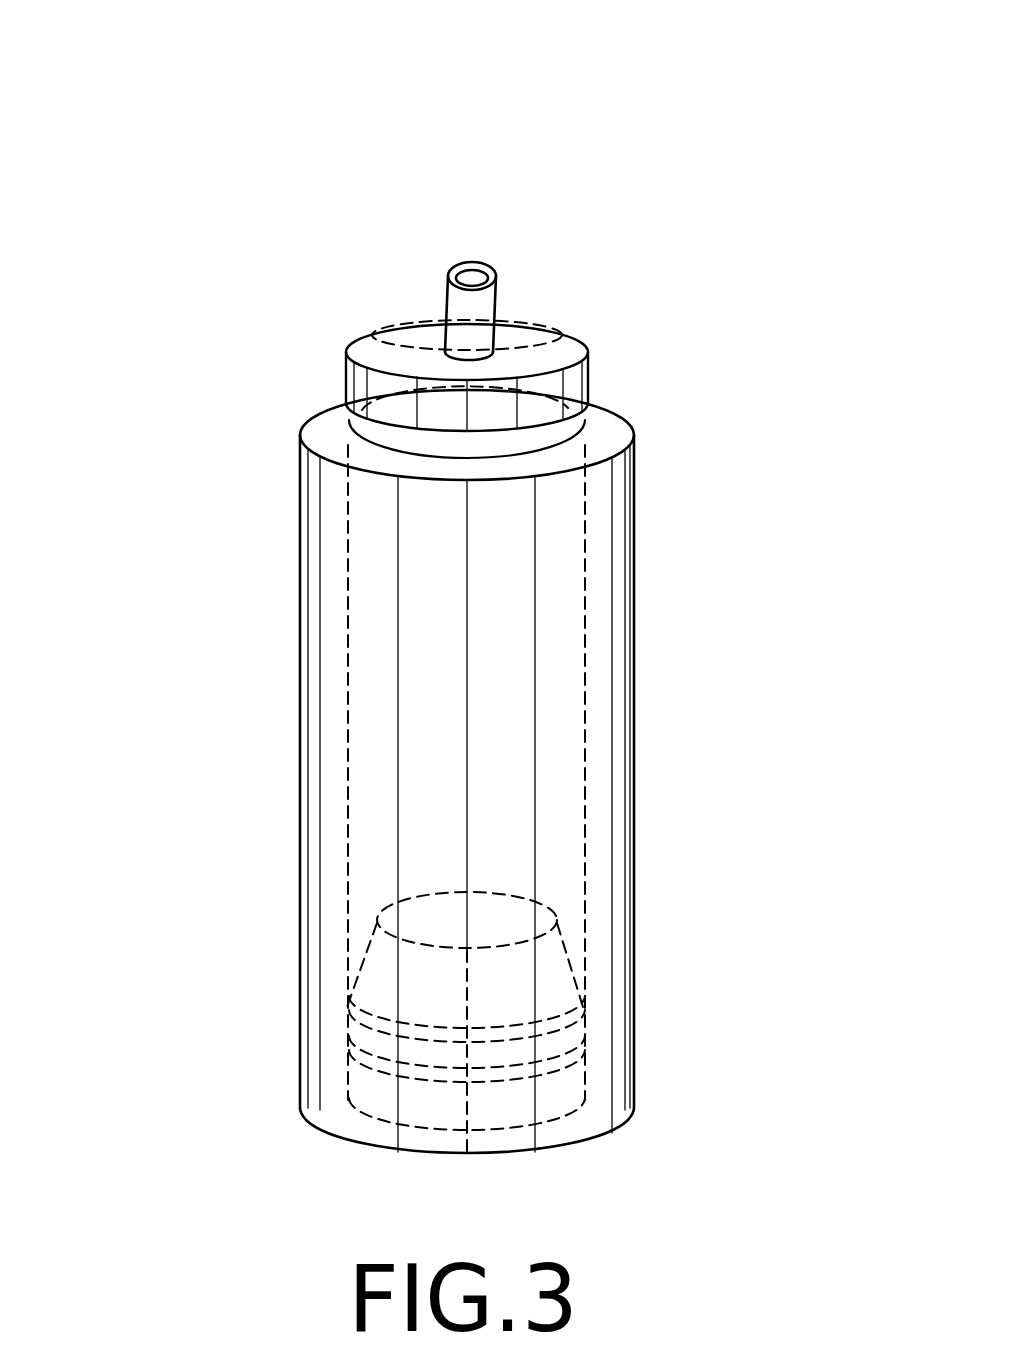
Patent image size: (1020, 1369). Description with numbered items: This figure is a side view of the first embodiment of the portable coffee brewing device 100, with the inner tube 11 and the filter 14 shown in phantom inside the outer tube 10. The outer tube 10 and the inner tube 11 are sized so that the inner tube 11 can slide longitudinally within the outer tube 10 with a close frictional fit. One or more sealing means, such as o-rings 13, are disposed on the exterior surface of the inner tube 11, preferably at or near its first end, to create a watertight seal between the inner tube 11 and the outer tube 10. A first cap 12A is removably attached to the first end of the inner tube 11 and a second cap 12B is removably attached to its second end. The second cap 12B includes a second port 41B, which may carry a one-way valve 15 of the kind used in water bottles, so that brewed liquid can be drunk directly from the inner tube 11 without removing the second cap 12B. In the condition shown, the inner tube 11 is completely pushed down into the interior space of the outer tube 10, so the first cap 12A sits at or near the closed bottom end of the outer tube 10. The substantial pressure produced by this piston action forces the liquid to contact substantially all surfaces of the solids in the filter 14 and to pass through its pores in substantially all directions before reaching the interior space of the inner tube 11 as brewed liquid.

The portable coffee brewing device 100 is at (505, 47).
The outer tube 10 is at (335, 795).
The inner tube 11 is at (583, 620).
The first cap 12A is at (347, 1080).
The second cap 12B is at (550, 332).
The o-rings 13 is at (583, 1048).
The filter 14 is at (485, 917).
The one-way valve 15 is at (500, 273).
The second port 41B is at (443, 327).